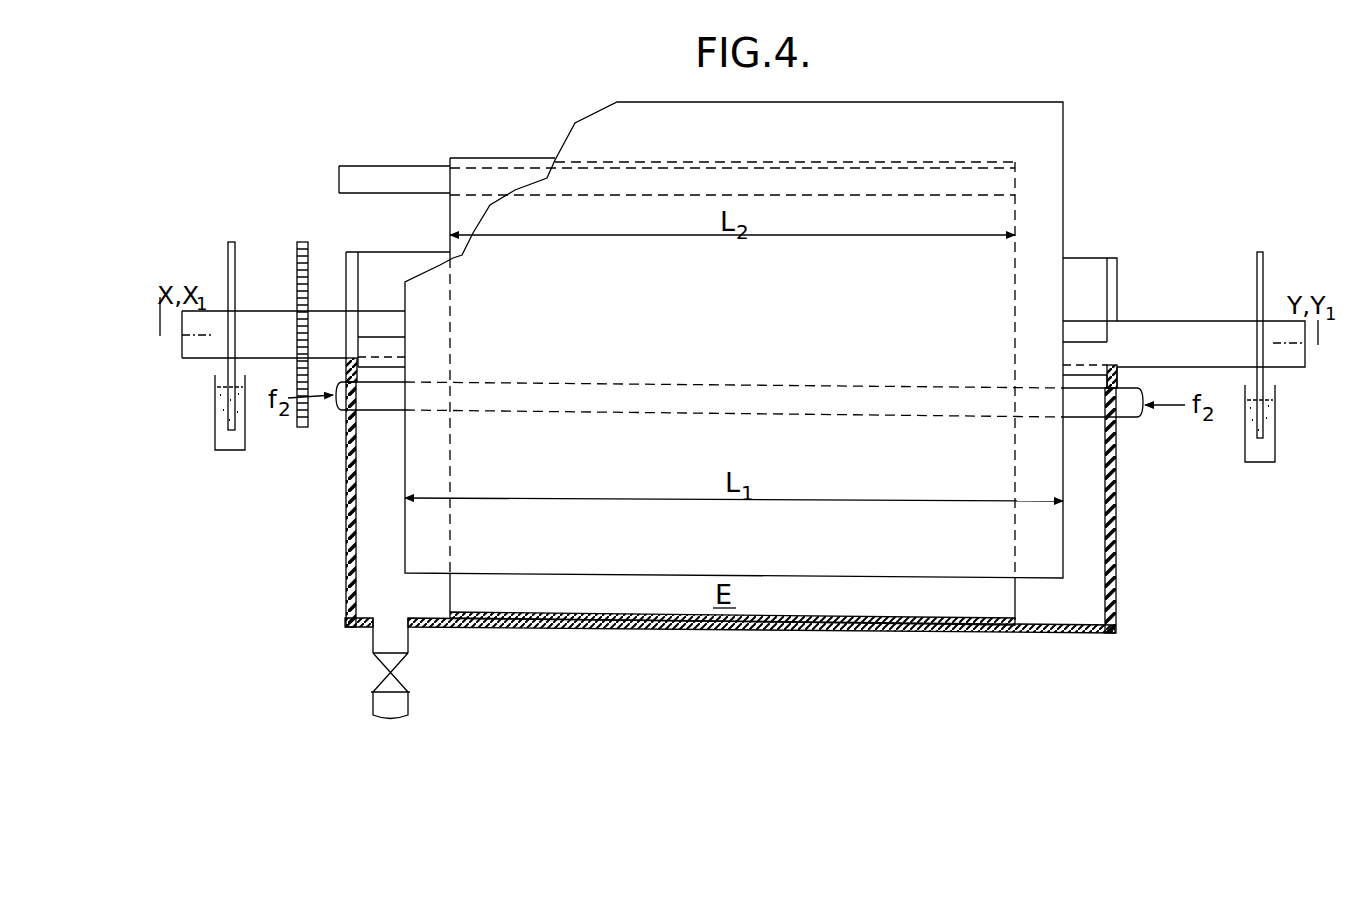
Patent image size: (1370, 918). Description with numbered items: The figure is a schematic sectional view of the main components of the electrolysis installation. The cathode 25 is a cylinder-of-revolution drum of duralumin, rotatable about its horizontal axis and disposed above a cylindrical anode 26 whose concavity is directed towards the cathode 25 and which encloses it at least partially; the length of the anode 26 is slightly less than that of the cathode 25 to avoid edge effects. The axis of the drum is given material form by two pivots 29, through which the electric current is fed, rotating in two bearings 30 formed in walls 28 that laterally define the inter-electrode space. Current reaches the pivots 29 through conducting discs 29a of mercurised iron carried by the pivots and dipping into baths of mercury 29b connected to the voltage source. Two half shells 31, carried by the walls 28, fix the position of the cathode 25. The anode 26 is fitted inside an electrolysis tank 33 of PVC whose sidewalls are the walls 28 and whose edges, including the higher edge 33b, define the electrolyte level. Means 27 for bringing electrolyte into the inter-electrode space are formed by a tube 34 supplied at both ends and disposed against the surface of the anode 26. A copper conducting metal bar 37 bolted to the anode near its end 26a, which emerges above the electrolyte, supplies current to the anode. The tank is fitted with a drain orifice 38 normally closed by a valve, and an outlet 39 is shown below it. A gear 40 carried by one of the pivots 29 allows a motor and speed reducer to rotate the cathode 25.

The cathode 25 is at (1053, 152).
The anode 26 is at (619, 590).
The end of the anode 26a is at (497, 160).
The means for bringing the electrolytic solutions 27 is at (338, 412).
The walls 28 is at (1116, 555).
The pivots 29 is at (267, 312).
The conducting discs 29a is at (236, 244).
The baths of mercury 29b is at (218, 418).
The bearings 30 is at (350, 362).
The half shells 31 is at (390, 350).
The electrolysis tank 33 is at (785, 631).
The edge of the tank 33b is at (353, 252).
The tube 34 is at (378, 403).
The conducting metal bar 37 is at (376, 176).
The drain orifice 38 is at (405, 624).
The outlet 39 is at (403, 702).
The gear 40 is at (302, 242).